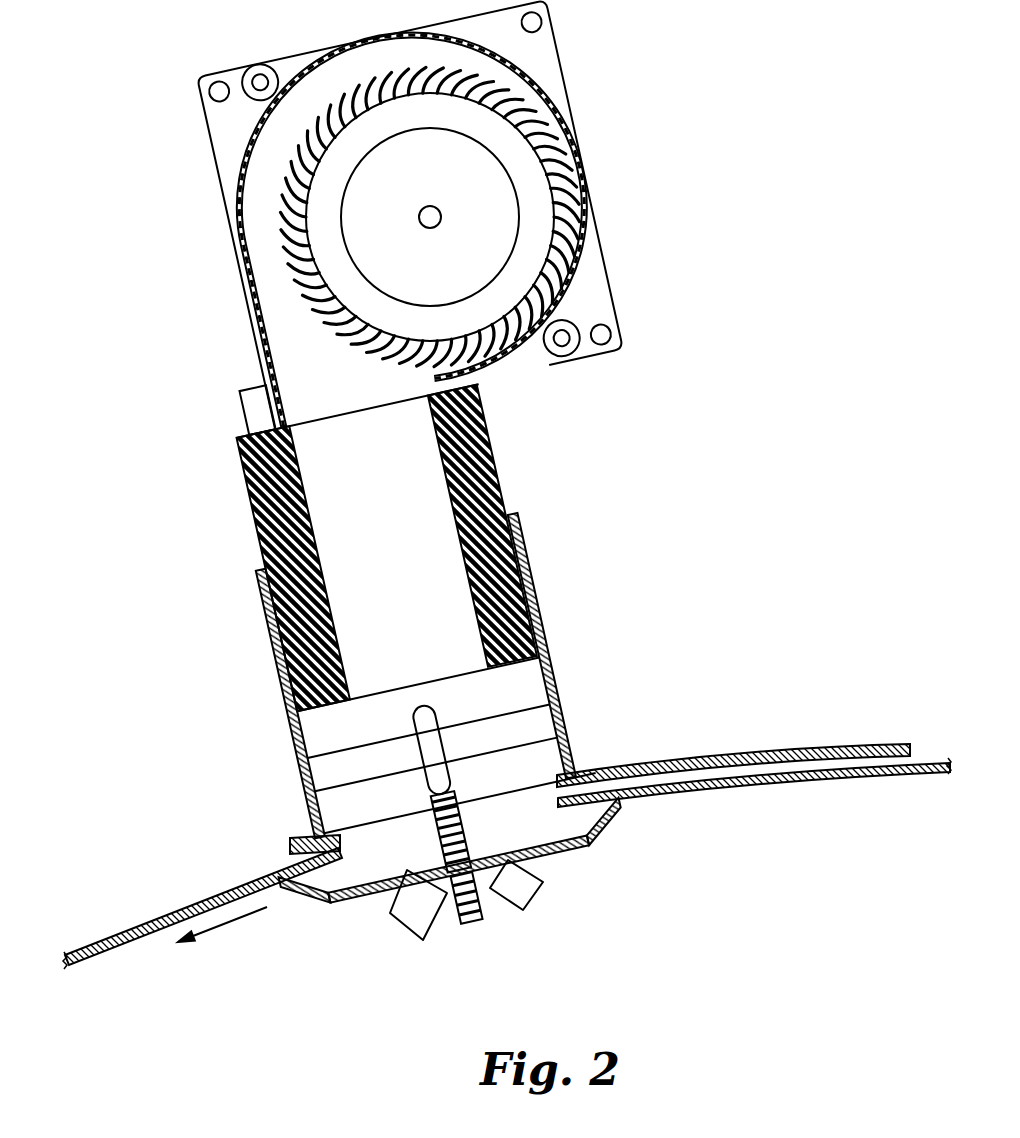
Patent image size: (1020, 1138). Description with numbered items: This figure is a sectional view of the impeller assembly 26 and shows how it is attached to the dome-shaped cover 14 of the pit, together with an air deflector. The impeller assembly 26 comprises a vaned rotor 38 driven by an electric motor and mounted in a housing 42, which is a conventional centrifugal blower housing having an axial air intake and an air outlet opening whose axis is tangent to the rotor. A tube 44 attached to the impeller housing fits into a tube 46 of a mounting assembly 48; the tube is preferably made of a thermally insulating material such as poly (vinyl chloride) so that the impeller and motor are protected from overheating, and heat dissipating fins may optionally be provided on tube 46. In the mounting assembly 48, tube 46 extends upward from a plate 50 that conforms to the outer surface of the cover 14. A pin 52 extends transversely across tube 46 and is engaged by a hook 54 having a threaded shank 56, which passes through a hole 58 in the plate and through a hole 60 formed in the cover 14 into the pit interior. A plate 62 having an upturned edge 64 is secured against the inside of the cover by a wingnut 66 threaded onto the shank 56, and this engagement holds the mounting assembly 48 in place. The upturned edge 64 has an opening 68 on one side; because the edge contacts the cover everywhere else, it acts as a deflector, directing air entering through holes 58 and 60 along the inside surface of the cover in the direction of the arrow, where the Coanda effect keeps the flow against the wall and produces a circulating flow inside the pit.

The dome-shaped cover 14 is at (187, 907).
The impeller assembly 26 is at (593, 120).
The vaned rotor 38 is at (533, 222).
The housing 42 is at (530, 70).
The tube 44 is at (262, 492).
The tube 46 is at (520, 527).
The mounting assembly 48 is at (558, 598).
The plate 50 is at (680, 757).
The pin 52 is at (518, 722).
The hook 54 is at (430, 717).
The threaded shank 56 is at (473, 837).
The hole 58 is at (565, 770).
The hole 60 is at (322, 858).
The plate 62 is at (567, 843).
The upturned edge 64 is at (610, 817).
The wingnut 66 is at (533, 893).
The opening 68 is at (297, 897).